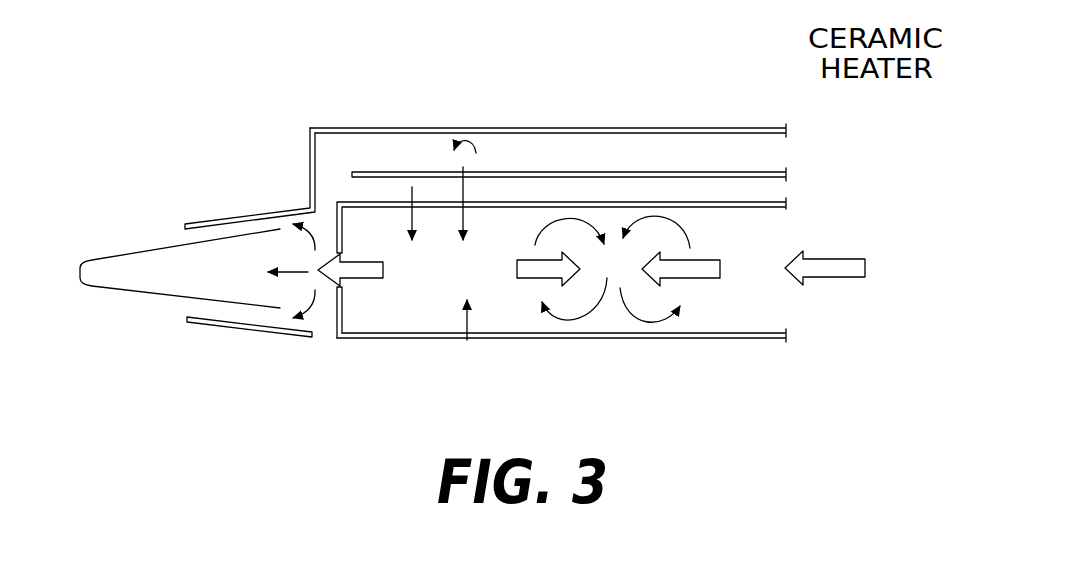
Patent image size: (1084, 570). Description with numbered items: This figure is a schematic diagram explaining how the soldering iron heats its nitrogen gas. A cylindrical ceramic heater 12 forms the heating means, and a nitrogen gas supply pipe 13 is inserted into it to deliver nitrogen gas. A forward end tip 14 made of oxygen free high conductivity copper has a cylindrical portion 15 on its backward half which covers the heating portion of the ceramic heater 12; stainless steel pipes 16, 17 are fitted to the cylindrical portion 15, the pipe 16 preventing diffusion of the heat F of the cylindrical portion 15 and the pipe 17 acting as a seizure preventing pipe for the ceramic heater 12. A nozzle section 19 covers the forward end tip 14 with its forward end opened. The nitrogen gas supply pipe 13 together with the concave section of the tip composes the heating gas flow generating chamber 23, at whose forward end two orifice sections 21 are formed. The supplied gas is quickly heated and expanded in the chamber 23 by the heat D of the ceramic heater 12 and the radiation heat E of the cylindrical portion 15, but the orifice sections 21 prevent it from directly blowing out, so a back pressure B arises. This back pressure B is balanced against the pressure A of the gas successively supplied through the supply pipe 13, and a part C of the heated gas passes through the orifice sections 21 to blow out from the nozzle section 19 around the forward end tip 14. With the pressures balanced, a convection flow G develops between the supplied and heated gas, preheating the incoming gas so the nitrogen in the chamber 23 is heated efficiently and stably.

The ceramic heater 12 is at (548, 106).
The nitrogen gas supply pipe 13 is at (765, 338).
The forward end tip 14 is at (207, 287).
The cylindrical portion 15 is at (547, 148).
The pipe 16 is at (698, 126).
The pipe 17 is at (620, 177).
The nozzle section 19 is at (287, 334).
The orifice sections 21 is at (347, 258).
The heating gas flow generating chamber 23 is at (465, 340).
The pressure A is at (838, 268).
The back pressure B is at (525, 277).
The part of the heated nitrogen gas C is at (368, 275).
The heat D is at (412, 215).
The radiation heat E is at (463, 193).
The heat F is at (457, 137).
The eddy flow G is at (598, 307).